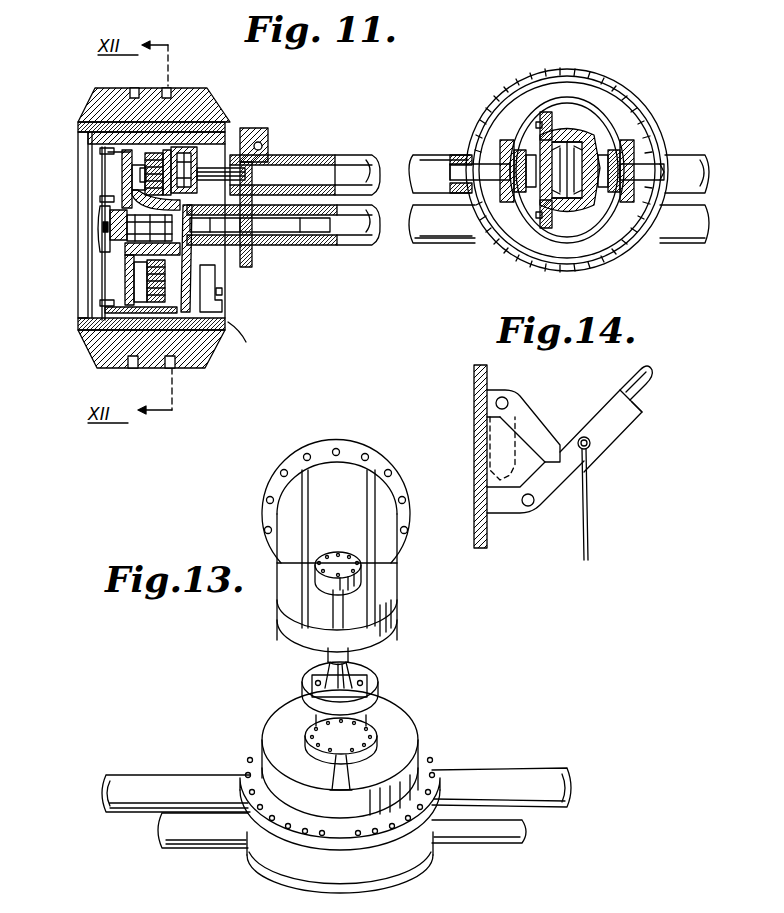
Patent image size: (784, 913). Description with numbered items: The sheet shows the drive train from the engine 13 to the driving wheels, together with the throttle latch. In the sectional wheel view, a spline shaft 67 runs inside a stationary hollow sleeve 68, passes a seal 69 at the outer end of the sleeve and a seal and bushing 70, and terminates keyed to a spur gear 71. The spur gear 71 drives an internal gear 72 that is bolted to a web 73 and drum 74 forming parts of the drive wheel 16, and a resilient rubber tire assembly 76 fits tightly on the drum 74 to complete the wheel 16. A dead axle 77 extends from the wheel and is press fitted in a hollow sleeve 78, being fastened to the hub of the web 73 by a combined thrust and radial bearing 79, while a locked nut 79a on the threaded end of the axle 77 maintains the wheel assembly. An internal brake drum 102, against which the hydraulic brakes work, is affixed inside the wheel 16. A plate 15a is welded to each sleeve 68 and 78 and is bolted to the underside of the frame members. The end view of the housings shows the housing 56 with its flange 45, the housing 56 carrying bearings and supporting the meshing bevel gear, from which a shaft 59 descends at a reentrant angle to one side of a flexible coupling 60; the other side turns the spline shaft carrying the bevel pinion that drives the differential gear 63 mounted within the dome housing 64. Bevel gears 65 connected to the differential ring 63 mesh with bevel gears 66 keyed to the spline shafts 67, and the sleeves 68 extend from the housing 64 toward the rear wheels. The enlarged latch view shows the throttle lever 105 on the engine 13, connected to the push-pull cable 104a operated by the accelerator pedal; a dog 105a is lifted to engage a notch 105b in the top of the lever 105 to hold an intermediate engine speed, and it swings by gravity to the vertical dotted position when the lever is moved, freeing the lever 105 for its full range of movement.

In FIG. 14, the engine 13 is at (474, 385).
In FIG. 11, the plate 15a is at (255, 126).
In FIG. 11, the drive wheel 16 is at (78, 322).
In FIG. 13, the cover flange 45 is at (275, 472).
In FIG. 13, the housing 56 is at (345, 480).
In FIG. 13, the shaft 59 is at (328, 660).
In FIG. 13, the flexible coupling 60 is at (372, 690).
In FIG. 11, the differential gear 63 is at (575, 135).
In FIG. 11, the dome housing 64 is at (565, 100).
In FIG. 13, the dome housing 64 is at (405, 862).
In FIG. 11, the bevel gears 65 is at (582, 150).
In FIG. 11, the bevel gears 66 is at (600, 160).
In FIG. 11, the spline shaft 67 is at (490, 166).
In FIG. 11, the hollow sleeve 68 is at (445, 166).
In FIG. 13, the hollow sleeve 68 is at (520, 780).
In FIG. 11, the seal 69 is at (250, 170).
In FIG. 11, the seal and bushing 70 is at (172, 160).
In FIG. 11, the spur gear 71 is at (160, 150).
In FIG. 11, the internal gear 72 is at (168, 282).
In FIG. 11, the web 73 is at (127, 282).
In FIG. 11, the drum 74 is at (108, 152).
In FIG. 11, the resilient rubber tire assembly 76 is at (249, 334).
In FIG. 11, the dead axle 77 is at (284, 232).
In FIG. 11, the hollow sleeve 78 is at (355, 240).
In FIG. 13, the hollow sleeve 78 is at (500, 840).
In FIG. 11, the combined thrust and radial bearing 79 is at (62, 222).
In FIG. 11, the nut 79a is at (102, 250).
In FIG. 11, the internal brake drum 102 is at (222, 304).
In FIG. 14, the push-pull cable 104a is at (588, 508).
In FIG. 14, the throttle lever 105 is at (625, 388).
In FIG. 14, the dog 105a is at (528, 432).
In FIG. 14, the notch 105b is at (580, 456).